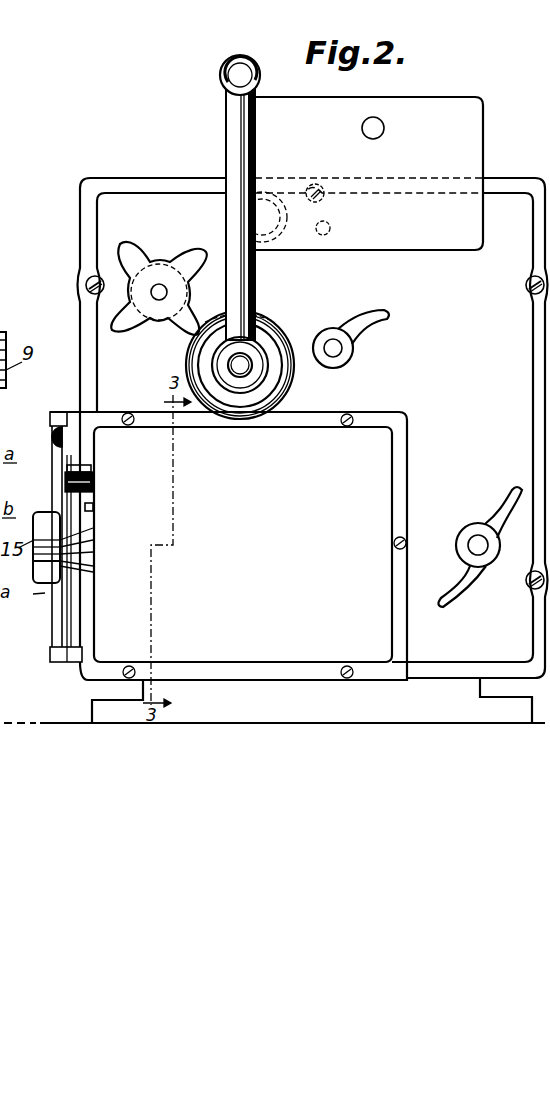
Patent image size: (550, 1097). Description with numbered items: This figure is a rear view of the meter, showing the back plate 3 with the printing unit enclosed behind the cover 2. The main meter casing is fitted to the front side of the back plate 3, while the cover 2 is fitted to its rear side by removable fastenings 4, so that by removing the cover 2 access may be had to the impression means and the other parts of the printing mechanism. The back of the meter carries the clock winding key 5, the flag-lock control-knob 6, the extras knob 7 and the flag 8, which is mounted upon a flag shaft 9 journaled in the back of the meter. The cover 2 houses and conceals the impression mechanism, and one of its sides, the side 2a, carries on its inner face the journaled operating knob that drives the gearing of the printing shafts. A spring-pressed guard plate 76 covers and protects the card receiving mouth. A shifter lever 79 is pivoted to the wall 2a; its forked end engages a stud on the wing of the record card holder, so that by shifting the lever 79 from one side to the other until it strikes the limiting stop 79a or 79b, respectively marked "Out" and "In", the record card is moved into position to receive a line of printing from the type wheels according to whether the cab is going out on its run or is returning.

The cover 2 is at (240, 532).
The side wall of the cover 2a is at (93, 595).
The back plate 3 is at (276, 450).
The removable fastenings 4 is at (350, 416).
The clock winding key 5 is at (497, 513).
The flag-lock control-knob 6 is at (156, 262).
The extras knob 7 is at (371, 318).
The flag 8 is at (360, 173).
The flag shaft 9 is at (246, 358).
The spring-pressed guard plate 76 is at (62, 452).
The shifter lever 79 is at (111, 482).
The limiting stop 79a is at (92, 478).
The limiting stop 79b is at (95, 507).